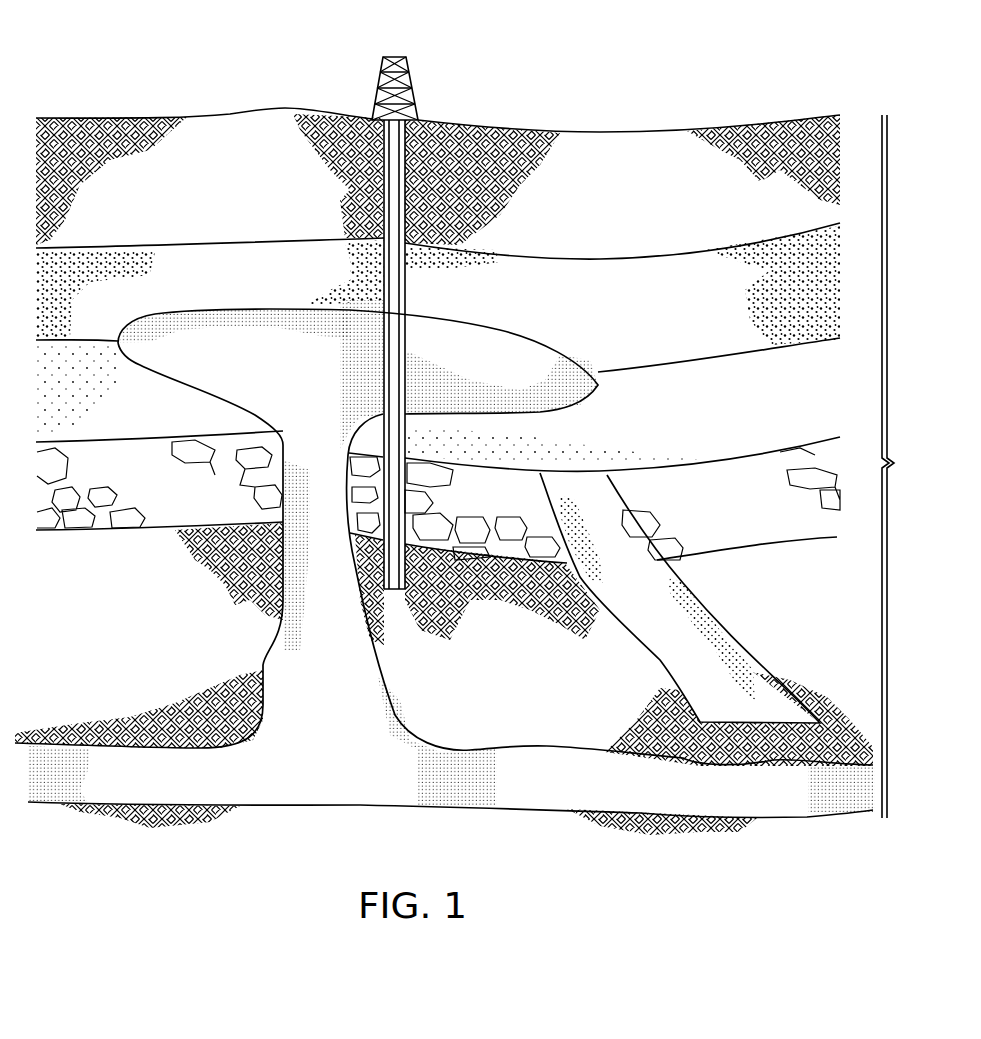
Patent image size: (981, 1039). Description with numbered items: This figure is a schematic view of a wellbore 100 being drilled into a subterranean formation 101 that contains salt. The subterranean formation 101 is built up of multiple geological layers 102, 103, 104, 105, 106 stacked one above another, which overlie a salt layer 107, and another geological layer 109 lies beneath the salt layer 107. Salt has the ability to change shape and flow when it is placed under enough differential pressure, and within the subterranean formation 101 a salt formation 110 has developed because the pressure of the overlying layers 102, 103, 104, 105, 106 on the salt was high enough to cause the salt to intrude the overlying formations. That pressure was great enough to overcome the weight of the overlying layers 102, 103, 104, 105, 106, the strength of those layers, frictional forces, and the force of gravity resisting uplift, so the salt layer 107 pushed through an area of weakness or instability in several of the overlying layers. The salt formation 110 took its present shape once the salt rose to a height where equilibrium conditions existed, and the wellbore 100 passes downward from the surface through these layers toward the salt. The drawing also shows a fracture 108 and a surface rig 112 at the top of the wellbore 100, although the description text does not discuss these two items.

The wellbore 100 is at (405, 203).
The subterranean formation 101 is at (911, 466).
The geological layer 102 is at (242, 198).
The geological layer 103 is at (661, 325).
The geological layer 104 is at (674, 428).
The geological layer 105 is at (174, 495).
The geological layer 106 is at (149, 642).
The salt layer 107 is at (172, 788).
The fracture 108 is at (653, 595).
The geological layer 109 is at (202, 872).
The salt formation 110 is at (293, 378).
The drilling rig 112 is at (398, 54).